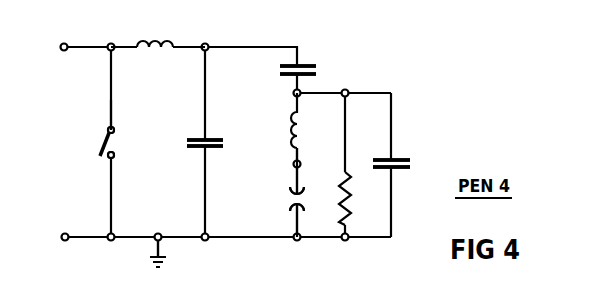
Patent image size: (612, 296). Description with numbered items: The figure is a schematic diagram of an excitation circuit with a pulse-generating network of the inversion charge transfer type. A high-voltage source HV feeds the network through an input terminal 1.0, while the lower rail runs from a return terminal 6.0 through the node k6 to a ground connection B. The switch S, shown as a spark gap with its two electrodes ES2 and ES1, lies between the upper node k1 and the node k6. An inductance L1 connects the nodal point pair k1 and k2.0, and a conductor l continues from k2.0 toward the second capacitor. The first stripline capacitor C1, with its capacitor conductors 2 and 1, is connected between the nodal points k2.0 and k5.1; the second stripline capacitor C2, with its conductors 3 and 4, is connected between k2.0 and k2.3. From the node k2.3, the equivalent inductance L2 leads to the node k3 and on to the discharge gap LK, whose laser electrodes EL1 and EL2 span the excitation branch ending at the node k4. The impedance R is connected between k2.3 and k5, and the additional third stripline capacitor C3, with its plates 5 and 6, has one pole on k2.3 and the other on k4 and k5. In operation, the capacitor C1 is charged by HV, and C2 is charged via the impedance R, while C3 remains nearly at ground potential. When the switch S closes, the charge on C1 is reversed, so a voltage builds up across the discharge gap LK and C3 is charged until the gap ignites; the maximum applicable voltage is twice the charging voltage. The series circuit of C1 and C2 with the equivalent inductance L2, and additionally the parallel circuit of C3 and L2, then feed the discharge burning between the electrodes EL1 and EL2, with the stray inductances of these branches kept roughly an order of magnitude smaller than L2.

The input terminal 1.0 is at (63, 35).
The ground terminal 6.0 is at (68, 255).
The nodal point k1 is at (107, 35).
The nodal point k2.0 is at (206, 35).
The nodal point k2.3 is at (292, 94).
The nodal point k3 is at (292, 163).
The nodal point k4 is at (297, 242).
The nodal point k5 is at (350, 254).
The nodal point k5.1 is at (210, 254).
The node k6 is at (112, 254).
The inductance L1 is at (142, 42).
The conductor l is at (266, 45).
The stripline capacitor C2 is at (310, 64).
The capacitor conductor 3 is at (283, 66).
The capacitor conductor 4 is at (285, 74).
The equivalent inductance L2 is at (303, 128).
The discharge gap LK is at (306, 200).
The laser electrode EL1 is at (290, 192).
The laser electrode EL2 is at (290, 207).
The impedance R is at (354, 189).
The third stripline capacitor C3 is at (412, 161).
The capacitor plate 5 is at (395, 158).
The capacitor plate 6 is at (392, 169).
The switch S is at (107, 130).
The switch electrode ES2 is at (114, 130).
The switch electrode ES1 is at (114, 157).
The high-voltage source HV is at (83, 128).
The stripline capacitor C1 is at (192, 150).
The capacitor conductor 2 is at (212, 139).
The capacitor conductor 1 is at (212, 148).
The ground connection B is at (157, 233).